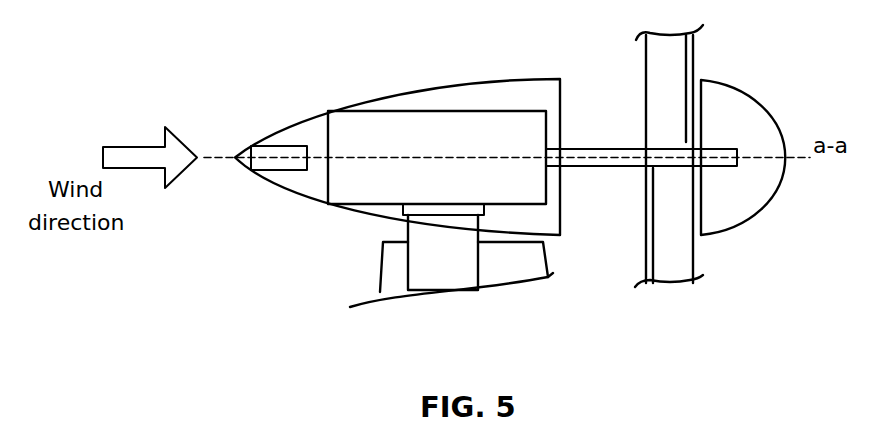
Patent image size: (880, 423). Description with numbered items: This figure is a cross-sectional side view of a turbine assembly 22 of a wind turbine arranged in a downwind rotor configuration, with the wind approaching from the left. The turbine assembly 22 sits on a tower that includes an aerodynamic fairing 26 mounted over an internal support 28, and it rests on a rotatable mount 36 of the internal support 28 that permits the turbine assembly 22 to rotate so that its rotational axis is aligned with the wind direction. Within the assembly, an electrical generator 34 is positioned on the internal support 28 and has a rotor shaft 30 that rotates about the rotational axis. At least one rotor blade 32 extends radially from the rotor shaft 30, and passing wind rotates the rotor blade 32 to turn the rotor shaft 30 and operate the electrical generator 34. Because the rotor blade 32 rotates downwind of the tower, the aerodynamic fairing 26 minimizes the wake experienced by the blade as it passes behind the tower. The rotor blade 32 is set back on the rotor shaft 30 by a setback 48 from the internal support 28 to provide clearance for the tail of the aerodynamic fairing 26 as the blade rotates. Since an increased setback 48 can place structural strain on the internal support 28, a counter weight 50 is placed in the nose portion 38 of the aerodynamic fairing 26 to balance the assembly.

The turbine assembly 22 is at (291, 42).
The aerodynamic fairing 26 is at (515, 267).
The internal support 28 is at (408, 267).
The rotor shaft 30 is at (717, 168).
The rotor blade 32 is at (693, 60).
The electrical generator 34 is at (467, 110).
The rotatable mount 36 is at (402, 207).
The nose portion 38 is at (292, 203).
The setback 48 is at (643, 305).
The counter weight 50 is at (273, 146).